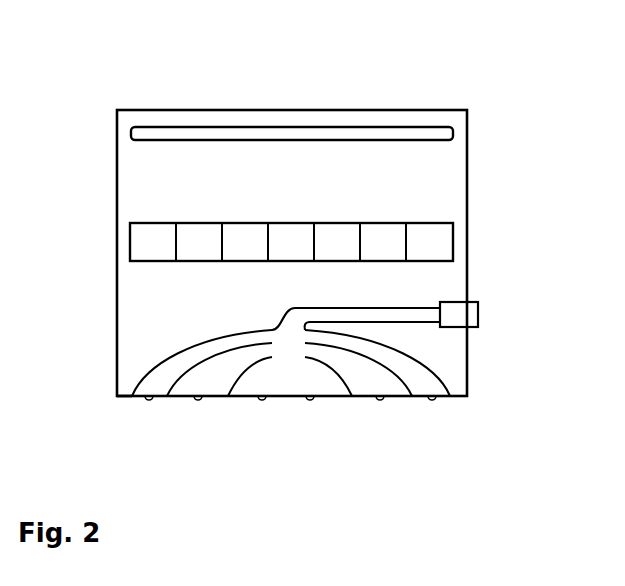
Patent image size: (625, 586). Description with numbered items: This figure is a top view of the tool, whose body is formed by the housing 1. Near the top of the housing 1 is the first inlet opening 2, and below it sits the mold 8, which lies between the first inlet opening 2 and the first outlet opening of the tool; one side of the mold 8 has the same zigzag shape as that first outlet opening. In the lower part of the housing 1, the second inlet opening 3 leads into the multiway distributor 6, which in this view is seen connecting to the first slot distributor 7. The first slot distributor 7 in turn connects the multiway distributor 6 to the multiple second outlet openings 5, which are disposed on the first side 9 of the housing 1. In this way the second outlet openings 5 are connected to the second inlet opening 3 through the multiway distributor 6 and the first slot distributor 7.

The housing 1 is at (467, 186).
The first inlet opening 2 is at (365, 128).
The second inlet opening 3 is at (478, 320).
The second outlet openings 5 is at (432, 400).
The multiway distributor 6 is at (415, 306).
The first slot distributor 7 is at (437, 368).
The mold 8 is at (440, 244).
The first side 9 is at (125, 398).